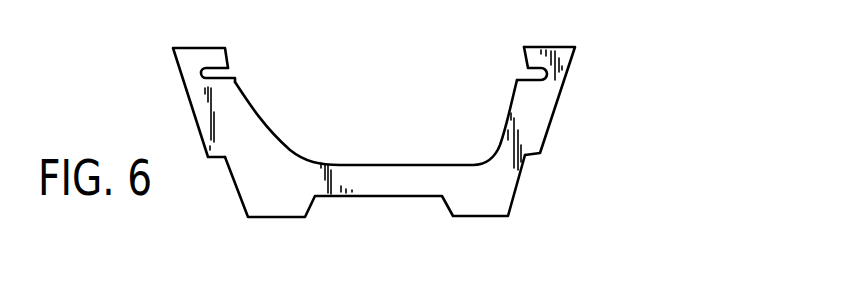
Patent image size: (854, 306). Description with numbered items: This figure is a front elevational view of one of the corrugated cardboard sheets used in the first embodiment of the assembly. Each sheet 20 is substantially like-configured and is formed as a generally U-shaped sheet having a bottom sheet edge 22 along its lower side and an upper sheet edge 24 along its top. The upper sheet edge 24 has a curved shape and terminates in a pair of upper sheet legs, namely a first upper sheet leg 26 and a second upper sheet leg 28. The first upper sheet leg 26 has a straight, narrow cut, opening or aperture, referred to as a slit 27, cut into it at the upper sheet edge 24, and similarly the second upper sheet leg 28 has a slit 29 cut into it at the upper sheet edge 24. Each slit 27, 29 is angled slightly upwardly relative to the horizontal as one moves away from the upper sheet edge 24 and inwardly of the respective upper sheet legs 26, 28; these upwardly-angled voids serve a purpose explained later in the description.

The sheet 20 is at (642, 143).
The bottom sheet edge 22 is at (345, 197).
The upper sheet edge 24 is at (318, 155).
The first upper sheet leg 26 is at (190, 58).
The slit 27 is at (215, 73).
The second upper sheet leg 28 is at (557, 53).
The slit 29 is at (528, 72).